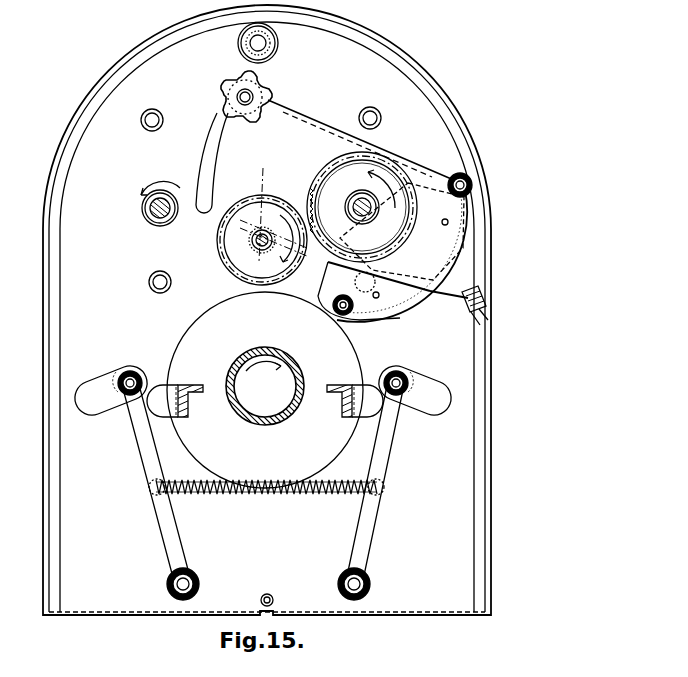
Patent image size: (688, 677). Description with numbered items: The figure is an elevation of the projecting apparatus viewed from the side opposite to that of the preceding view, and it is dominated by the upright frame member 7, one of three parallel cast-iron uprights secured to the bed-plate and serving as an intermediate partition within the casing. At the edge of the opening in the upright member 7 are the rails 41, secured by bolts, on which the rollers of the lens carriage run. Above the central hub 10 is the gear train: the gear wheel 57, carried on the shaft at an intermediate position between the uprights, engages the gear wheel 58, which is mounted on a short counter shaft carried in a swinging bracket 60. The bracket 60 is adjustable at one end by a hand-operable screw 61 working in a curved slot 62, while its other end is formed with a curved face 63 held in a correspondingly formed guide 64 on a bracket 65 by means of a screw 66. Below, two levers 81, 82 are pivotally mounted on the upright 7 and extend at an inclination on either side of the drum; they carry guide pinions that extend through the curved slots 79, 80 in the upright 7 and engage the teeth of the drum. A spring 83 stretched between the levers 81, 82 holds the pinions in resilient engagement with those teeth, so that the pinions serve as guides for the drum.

The upright frame member 7 is at (356, 27).
The hub 10 is at (293, 399).
The rails 41 is at (183, 385).
The gear wheel 57 is at (377, 158).
The gear wheel 58 is at (258, 296).
The swinging bracket 60 is at (288, 116).
The hand-operable screw 61 is at (233, 84).
The curved slot 62 is at (221, 124).
The curved face 63 is at (447, 242).
The guide 64 is at (418, 306).
The bracket 65 is at (390, 308).
The screw 66 is at (466, 295).
The curved slot 79 is at (440, 407).
The curved slot 80 is at (108, 409).
The lever 81 is at (362, 522).
The lever 82 is at (174, 520).
The spring 83 is at (275, 495).